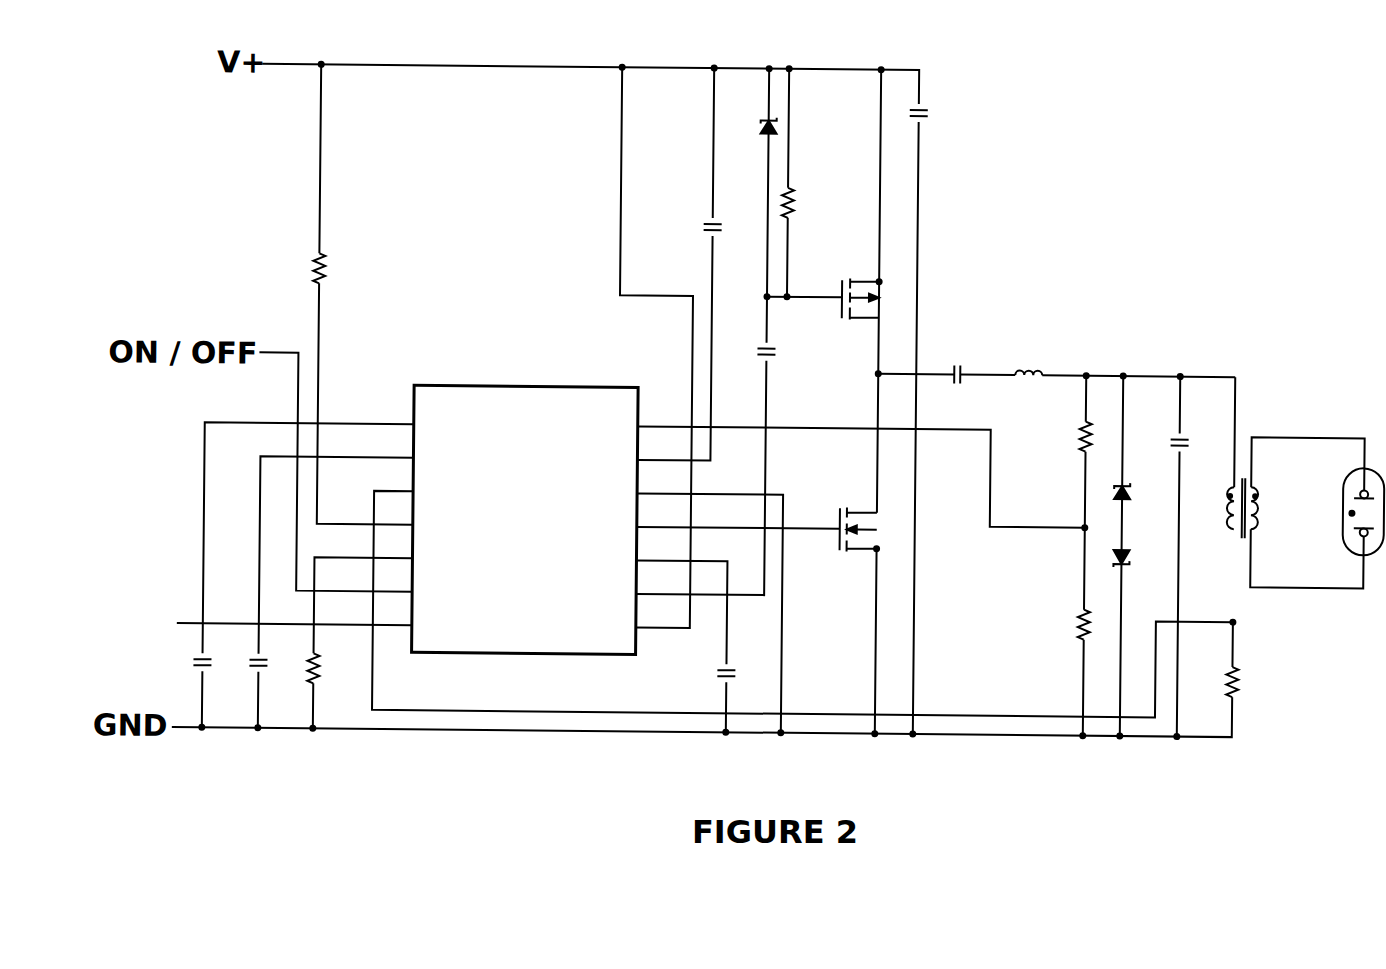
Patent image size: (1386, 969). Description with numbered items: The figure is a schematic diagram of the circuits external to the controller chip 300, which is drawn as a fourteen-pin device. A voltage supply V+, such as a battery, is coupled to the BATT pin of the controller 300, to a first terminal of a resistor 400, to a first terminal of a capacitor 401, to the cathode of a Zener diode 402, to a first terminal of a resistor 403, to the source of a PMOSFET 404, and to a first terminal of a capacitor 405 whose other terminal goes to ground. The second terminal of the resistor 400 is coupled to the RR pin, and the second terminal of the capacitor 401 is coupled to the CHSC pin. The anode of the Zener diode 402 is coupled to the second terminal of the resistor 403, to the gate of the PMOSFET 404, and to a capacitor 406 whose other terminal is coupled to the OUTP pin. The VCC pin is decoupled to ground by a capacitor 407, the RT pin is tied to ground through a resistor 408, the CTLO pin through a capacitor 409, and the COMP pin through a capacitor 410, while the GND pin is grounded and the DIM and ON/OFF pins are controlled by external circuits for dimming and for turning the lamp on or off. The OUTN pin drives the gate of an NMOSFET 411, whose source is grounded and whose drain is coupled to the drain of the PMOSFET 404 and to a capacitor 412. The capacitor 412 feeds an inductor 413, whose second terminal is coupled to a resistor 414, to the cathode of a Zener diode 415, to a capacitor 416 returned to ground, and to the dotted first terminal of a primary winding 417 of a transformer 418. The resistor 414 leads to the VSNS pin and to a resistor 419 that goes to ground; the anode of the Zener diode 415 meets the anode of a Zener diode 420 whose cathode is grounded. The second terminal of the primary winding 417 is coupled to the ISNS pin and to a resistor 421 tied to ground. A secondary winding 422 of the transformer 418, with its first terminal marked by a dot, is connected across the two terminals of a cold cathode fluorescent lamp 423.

The controller chip 300 is at (528, 384).
The resistor 400 is at (327, 272).
The capacitor 401 is at (708, 222).
The Zener diode 402 is at (760, 126).
The resistor 403 is at (794, 202).
The PMOSFET 404 is at (849, 273).
The capacitor 405 is at (922, 118).
The capacitor 406 is at (772, 360).
The capacitor 407 is at (716, 674).
The resistor 408 is at (332, 654).
The capacitor 409 is at (276, 654).
The capacitor 410 is at (222, 654).
The NMOSFET 411 is at (850, 503).
The capacitor 412 is at (955, 358).
The inductor 413 is at (1026, 358).
The resistor 414 is at (1080, 444).
The Zener diode 415 is at (1130, 491).
The capacitor 416 is at (1186, 432).
The primary winding 417 is at (1208, 508).
The transformer 418 is at (1245, 470).
The resistor 419 is at (1077, 632).
The Zener diode 420 is at (1130, 560).
The resistor 421 is at (1242, 684).
The secondary winding 422 is at (1307, 512).
The cold cathode fluorescent lamp 423 is at (1340, 524).